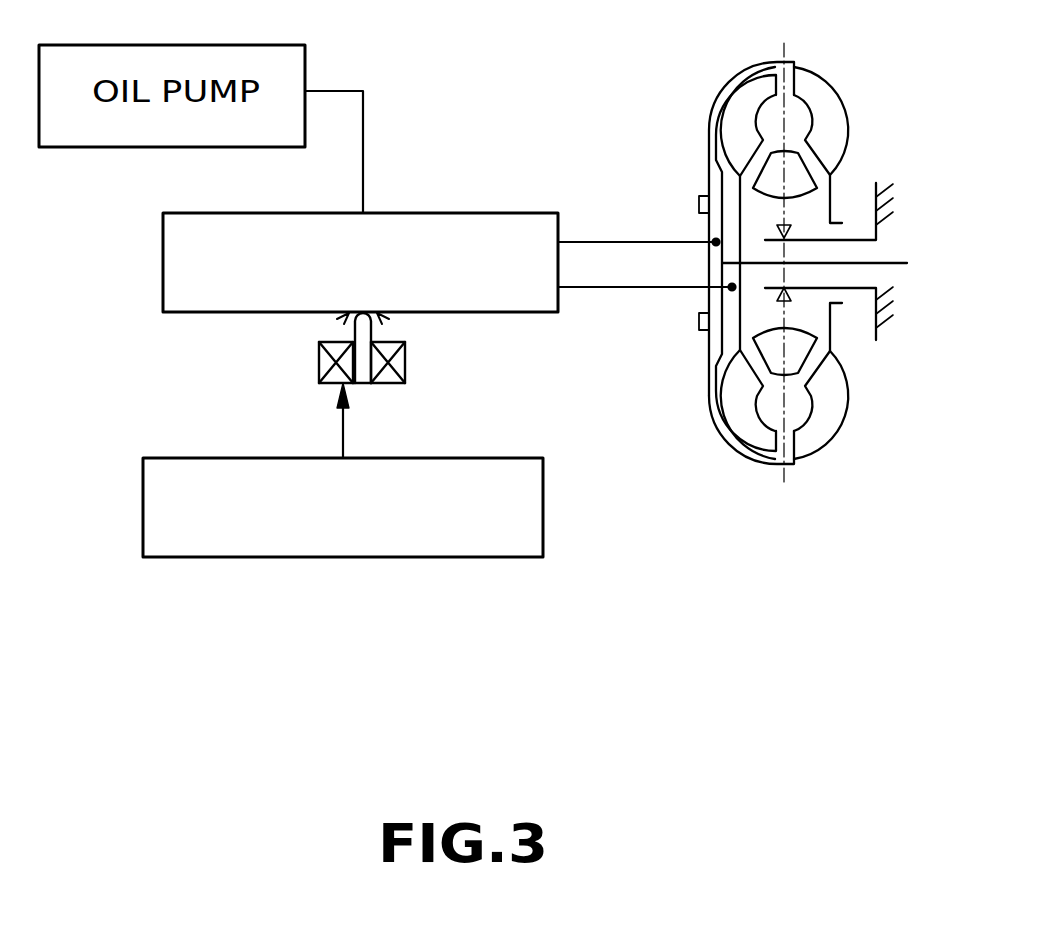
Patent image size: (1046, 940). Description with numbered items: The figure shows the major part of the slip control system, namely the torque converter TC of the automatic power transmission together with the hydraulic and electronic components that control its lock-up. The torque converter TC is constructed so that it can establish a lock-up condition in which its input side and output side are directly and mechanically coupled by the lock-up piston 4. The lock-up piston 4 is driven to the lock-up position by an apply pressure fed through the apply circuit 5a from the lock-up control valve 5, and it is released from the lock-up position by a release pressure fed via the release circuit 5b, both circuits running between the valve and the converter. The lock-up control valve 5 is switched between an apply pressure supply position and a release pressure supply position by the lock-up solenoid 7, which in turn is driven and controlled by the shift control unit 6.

The torque converter TC is at (781, 248).
The lock-up piston 4 is at (720, 186).
The lock-up control valve 5 is at (478, 213).
The apply circuit 5a is at (620, 289).
The release circuit 5b is at (618, 241).
The shift control unit 6 is at (477, 458).
The lock-up solenoid 7 is at (319, 368).